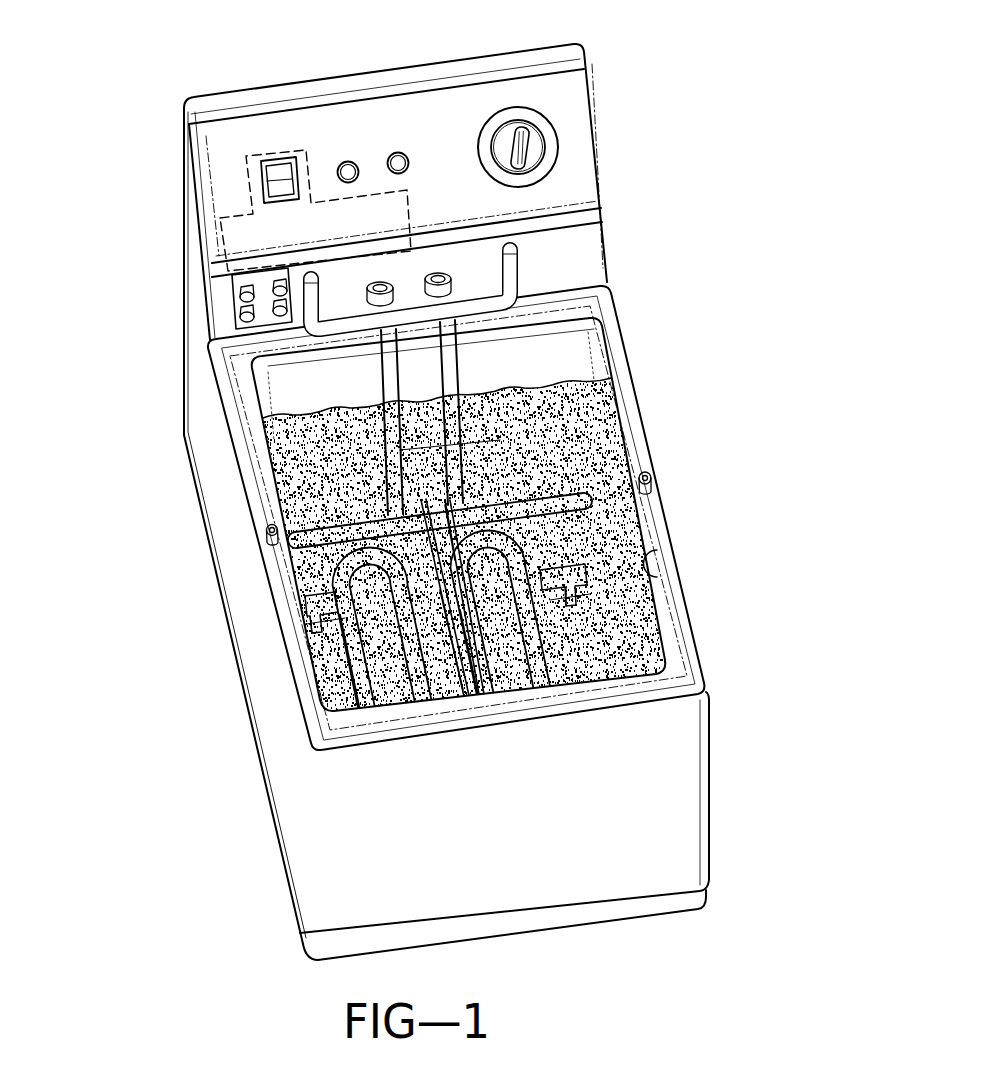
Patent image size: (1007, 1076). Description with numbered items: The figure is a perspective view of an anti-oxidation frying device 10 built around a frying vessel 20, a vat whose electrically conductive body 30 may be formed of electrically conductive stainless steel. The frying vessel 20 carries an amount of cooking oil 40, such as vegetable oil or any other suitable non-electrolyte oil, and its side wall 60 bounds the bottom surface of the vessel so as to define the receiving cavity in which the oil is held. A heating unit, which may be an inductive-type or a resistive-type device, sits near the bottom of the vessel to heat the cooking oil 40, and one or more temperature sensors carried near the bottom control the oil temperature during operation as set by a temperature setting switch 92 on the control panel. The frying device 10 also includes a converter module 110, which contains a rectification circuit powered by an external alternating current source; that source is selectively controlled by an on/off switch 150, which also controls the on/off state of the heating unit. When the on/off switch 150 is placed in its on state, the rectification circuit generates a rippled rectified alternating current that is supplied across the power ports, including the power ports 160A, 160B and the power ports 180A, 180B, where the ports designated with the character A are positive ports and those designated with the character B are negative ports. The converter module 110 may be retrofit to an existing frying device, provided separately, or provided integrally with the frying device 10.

The anti-oxidation frying device 10 is at (86, 102).
The frying vessel 20 is at (258, 658).
The electrically conductive body 30 is at (656, 576).
The cooking oil 40 is at (492, 390).
The side wall 60 is at (602, 477).
The temperature setting switch 92 is at (533, 145).
The converter module 110 is at (236, 212).
The on/off switch 150 is at (277, 172).
The power port 160A is at (240, 313).
The power port 160B is at (280, 307).
The power port 180A is at (280, 283).
The power port 180B is at (243, 297).